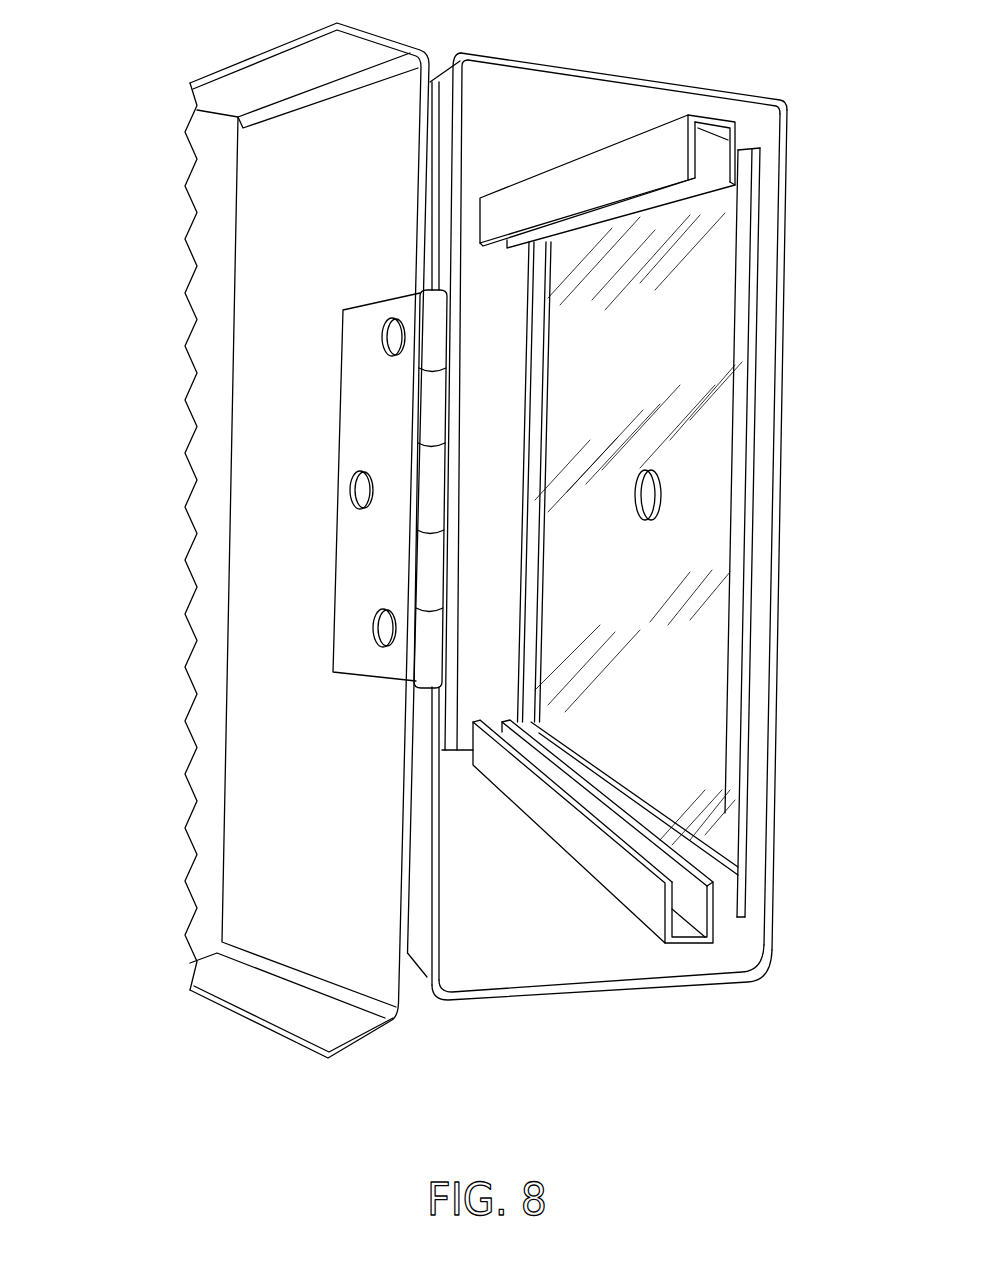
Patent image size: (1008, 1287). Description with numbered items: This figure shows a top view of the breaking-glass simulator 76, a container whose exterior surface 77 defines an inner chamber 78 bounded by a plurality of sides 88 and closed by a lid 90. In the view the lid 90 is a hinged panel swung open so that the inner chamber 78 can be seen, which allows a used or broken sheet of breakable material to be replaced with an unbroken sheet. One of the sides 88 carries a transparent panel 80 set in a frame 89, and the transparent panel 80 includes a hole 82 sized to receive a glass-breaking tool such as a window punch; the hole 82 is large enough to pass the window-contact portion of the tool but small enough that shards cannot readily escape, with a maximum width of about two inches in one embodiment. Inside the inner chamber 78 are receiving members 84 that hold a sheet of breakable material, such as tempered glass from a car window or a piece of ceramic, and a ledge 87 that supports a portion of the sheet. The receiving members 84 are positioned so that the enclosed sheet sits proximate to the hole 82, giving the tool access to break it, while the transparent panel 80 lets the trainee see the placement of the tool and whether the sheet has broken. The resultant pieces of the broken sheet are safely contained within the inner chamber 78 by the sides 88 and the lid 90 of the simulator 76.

The breaking-glass simulator 76 is at (172, 481).
The exterior surface 77 is at (778, 539).
The inner chamber 78 is at (552, 98).
The transparent panel 80 is at (708, 703).
The hole 82 is at (661, 496).
The receiving members 84 is at (722, 147).
The ledge 87 is at (507, 387).
The sides 88 is at (655, 983).
The frame 89 is at (770, 832).
The lid 90 is at (260, 270).